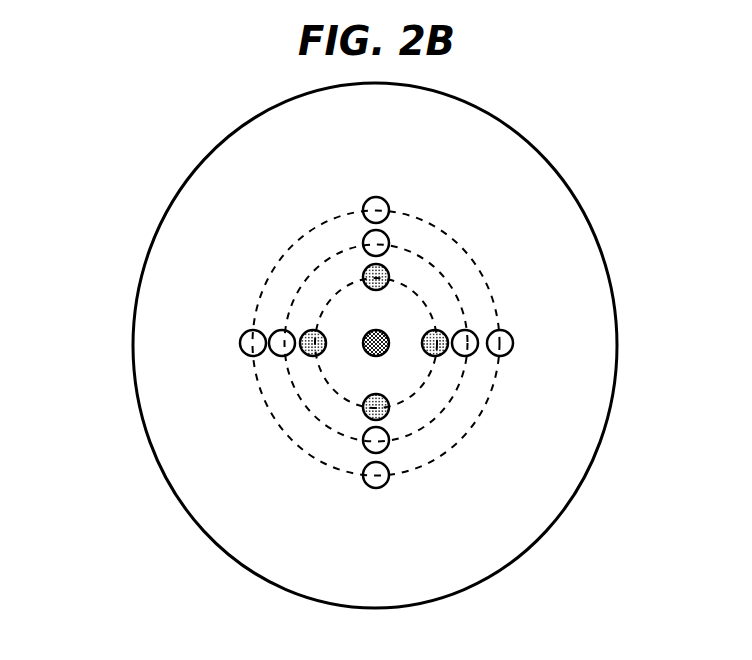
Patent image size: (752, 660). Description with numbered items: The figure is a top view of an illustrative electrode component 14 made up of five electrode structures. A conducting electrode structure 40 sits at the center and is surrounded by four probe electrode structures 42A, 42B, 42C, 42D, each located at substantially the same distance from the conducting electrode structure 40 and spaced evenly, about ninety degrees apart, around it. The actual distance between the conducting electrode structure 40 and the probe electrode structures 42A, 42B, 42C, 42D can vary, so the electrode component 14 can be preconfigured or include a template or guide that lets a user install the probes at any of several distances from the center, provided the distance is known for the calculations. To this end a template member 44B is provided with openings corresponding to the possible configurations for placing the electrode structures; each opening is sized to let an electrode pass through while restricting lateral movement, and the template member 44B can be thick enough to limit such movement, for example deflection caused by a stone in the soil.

The electrode component 14 is at (158, 142).
The conducting electrode structure 40 is at (376, 331).
The probe electrode structure 42A is at (366, 277).
The probe electrode structure 42B is at (438, 331).
The probe electrode structure 42C is at (387, 407).
The probe electrode structure 42D is at (312, 357).
The template member 44B is at (396, 536).